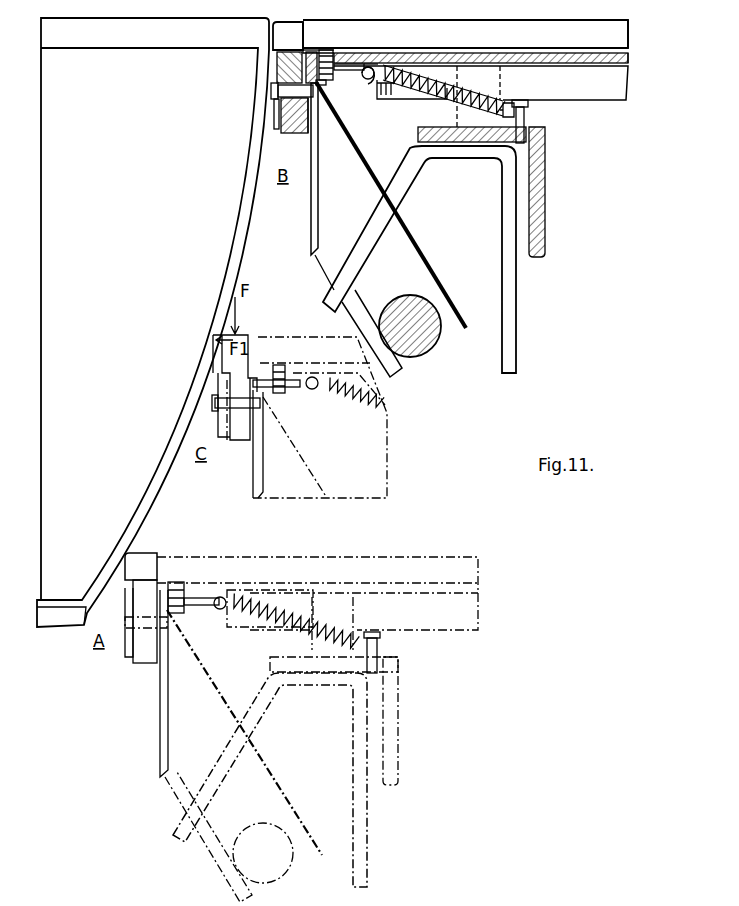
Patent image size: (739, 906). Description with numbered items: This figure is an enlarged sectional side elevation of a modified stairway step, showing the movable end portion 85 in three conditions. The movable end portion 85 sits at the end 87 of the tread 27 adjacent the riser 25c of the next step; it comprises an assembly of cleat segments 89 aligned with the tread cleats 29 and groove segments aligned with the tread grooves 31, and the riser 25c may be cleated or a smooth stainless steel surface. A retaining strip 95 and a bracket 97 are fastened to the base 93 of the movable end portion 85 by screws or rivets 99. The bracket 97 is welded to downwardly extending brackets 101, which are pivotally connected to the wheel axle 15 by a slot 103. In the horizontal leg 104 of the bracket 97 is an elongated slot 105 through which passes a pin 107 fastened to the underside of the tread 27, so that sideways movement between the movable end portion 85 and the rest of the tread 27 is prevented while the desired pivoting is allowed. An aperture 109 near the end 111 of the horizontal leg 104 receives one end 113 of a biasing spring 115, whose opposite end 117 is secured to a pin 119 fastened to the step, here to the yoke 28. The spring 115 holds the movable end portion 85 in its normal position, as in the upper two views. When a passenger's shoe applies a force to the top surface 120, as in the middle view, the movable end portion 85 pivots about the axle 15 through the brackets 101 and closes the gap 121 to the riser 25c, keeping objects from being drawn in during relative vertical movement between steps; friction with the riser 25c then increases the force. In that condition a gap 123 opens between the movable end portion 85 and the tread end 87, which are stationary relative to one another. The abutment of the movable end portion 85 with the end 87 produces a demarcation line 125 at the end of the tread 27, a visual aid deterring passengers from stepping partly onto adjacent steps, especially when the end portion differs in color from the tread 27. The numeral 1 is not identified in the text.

The vehicle body roof frame 1 is at (185, 20).
The wheel axle 15 is at (440, 352).
The riser 25c is at (160, 483).
The tread 27 is at (143, 20).
The yoke 28 is at (518, 318).
The tread cleats 29 is at (630, 46).
The tread grooves 31 is at (595, 42).
The movable end portion 85 is at (282, 35).
The end of the tread 87 is at (302, 33).
The cleat segments 89 is at (300, 26).
The base 93 is at (295, 133).
The retaining strip 95 is at (277, 128).
The bracket 97 is at (310, 124).
The screws or rivets 99 is at (273, 90).
The downwardly extending brackets 101 is at (310, 240).
The slot 103 is at (403, 363).
The horizontal leg 104 is at (352, 74).
The elongated slot 105 is at (345, 62).
The pin 107 is at (321, 83).
The aperture 109 is at (366, 83).
The end of the horizontal leg 111 is at (412, 89).
The end of the biasing spring 113 is at (366, 54).
The biasing spring 115 is at (453, 100).
The opposite end of the spring 117 is at (527, 115).
The pin 119 is at (518, 107).
The top surface 120 is at (240, 332).
The gap 121 is at (267, 23).
The gap 123 is at (255, 336).
The demarcation line 125 is at (306, 24).